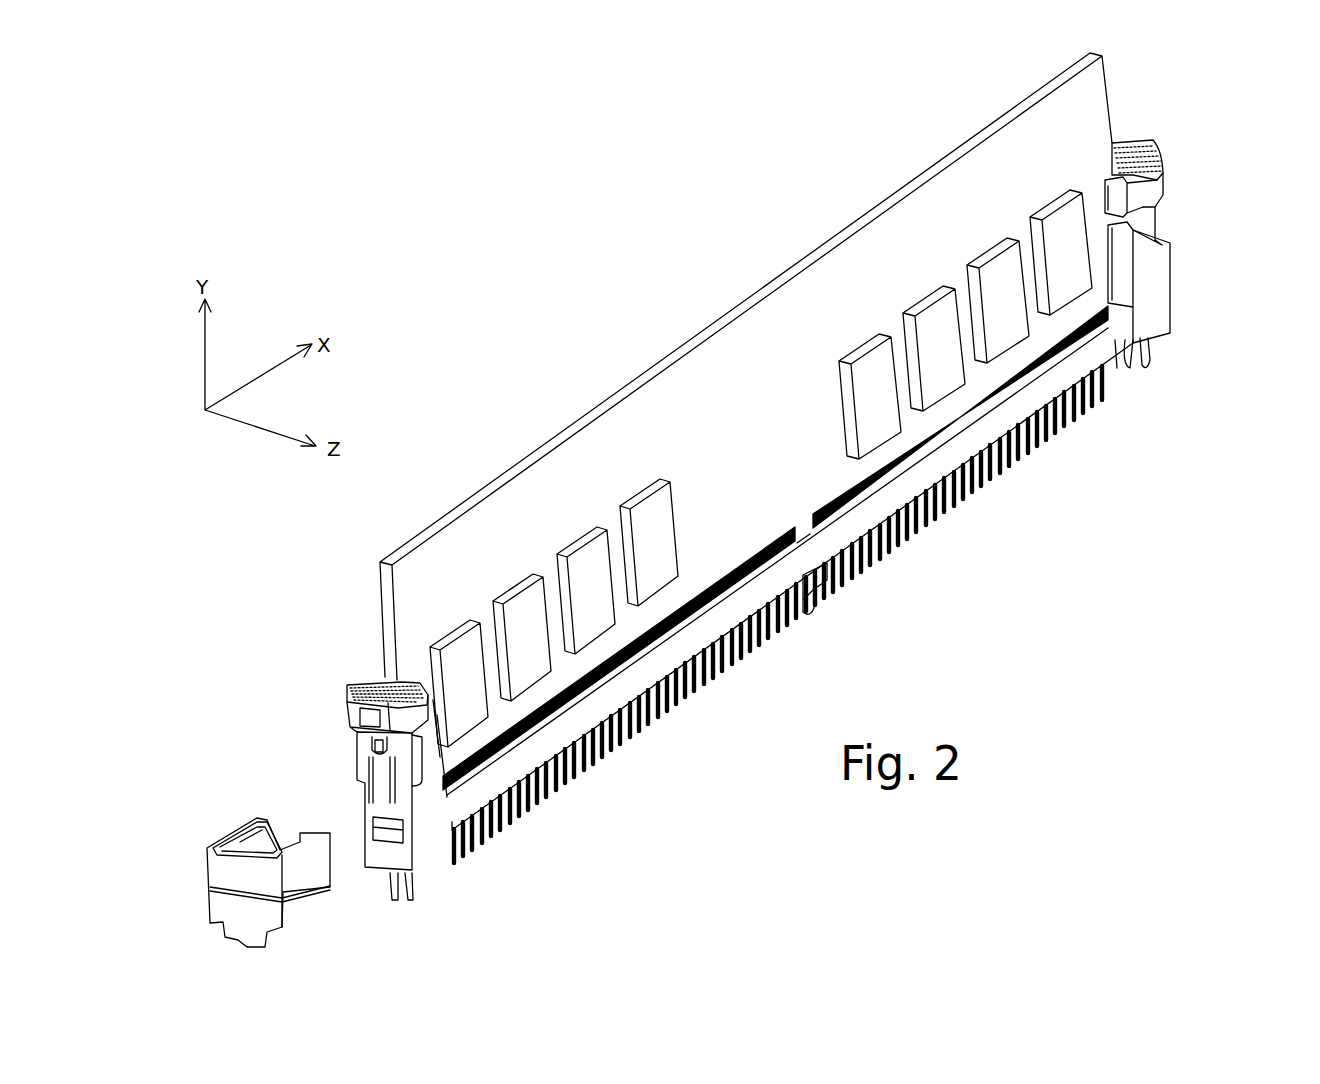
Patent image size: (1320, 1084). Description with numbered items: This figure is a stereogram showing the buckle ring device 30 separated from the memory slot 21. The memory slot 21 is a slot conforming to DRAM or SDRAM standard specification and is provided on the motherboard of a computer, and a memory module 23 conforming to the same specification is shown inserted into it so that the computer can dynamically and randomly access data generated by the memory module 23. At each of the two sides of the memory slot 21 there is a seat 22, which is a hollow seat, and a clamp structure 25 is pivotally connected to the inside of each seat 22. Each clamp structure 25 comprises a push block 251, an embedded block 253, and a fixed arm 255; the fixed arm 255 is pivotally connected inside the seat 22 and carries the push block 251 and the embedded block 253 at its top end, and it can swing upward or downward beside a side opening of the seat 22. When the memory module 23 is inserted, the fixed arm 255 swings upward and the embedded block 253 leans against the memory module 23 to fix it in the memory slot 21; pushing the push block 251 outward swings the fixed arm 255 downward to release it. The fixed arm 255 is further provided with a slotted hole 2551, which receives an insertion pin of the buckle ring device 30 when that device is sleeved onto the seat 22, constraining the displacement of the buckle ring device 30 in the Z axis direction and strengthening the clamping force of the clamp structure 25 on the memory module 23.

The memory slot 21 is at (936, 486).
The seat 22 is at (420, 840).
The memory module 23 is at (748, 345).
The clamp structure 25 is at (745, 426).
The push block 251 is at (360, 683).
The embedded block 253 is at (380, 680).
The fixed arm 255 is at (360, 733).
The slotted hole 2551 is at (320, 748).
The buckle ring device 30 is at (188, 845).